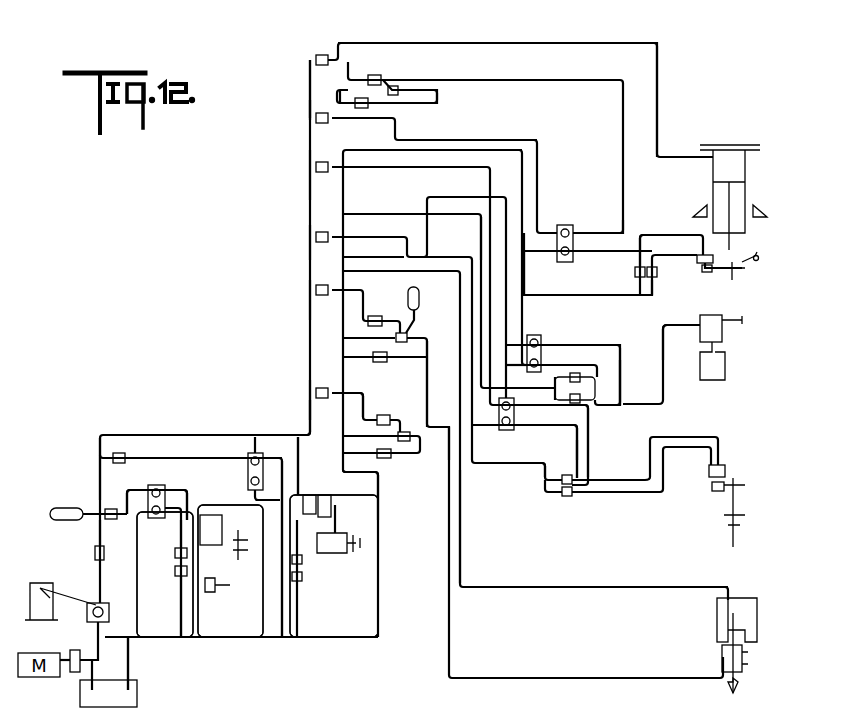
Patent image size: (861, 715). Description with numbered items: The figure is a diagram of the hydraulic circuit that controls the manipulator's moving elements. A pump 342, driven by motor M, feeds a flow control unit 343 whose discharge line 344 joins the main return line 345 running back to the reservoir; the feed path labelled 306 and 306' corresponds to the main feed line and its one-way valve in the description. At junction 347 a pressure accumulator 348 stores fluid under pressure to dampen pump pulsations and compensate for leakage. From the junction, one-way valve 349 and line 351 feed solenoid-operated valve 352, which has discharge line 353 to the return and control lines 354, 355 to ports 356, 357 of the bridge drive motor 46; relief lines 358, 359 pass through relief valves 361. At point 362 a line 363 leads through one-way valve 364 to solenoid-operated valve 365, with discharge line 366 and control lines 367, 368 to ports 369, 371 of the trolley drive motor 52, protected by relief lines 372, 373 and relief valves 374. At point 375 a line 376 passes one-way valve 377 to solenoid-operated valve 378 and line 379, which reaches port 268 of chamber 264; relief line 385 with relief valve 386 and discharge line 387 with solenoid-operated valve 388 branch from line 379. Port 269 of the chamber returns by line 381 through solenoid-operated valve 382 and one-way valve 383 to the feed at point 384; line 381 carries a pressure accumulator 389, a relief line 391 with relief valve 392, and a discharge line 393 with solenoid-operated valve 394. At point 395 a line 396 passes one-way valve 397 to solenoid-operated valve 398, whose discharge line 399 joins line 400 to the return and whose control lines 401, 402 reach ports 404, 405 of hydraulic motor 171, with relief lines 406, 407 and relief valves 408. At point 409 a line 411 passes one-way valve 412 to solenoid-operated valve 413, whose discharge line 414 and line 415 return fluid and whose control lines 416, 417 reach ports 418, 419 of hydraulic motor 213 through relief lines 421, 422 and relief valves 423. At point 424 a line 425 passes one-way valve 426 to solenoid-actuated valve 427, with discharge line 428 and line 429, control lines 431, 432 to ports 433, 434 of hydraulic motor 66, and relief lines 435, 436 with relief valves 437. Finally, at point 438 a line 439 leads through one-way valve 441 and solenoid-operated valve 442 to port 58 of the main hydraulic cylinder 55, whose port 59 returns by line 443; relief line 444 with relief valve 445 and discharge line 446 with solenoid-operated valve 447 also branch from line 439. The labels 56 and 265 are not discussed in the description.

The one-way valve 441 is at (320, 54).
The line 439 is at (355, 57).
The line 443 is at (612, 42).
The connection point on main feed line 438 is at (309, 60).
The relief line 444 is at (342, 90).
The one-way valve 426 is at (320, 110).
The connection point on main feed line 424 is at (314, 119).
The one-way valve 412 is at (314, 166).
The connection point on main feed line 409 is at (309, 172).
The one-way valve 397 is at (315, 236).
The connection point on main feed line 395 is at (309, 243).
The one-way valve 383 is at (315, 288).
The connection point on main feed line 384 is at (309, 300).
The relief line 391 is at (342, 336).
The solenoid-operated valve 394 is at (372, 356).
The one-way valve 377 is at (315, 390).
The connection point on main feed line 375 is at (315, 397).
The relief line 385 is at (308, 428).
The solenoid-operated valve 442 is at (381, 78).
The relief valve 445 is at (398, 88).
The discharge line 446 is at (438, 97).
The line 425 is at (444, 140).
The solenoid-operated valve 447 is at (362, 109).
The line 429 is at (512, 151).
The line 411 is at (386, 169).
The port 59 is at (690, 154).
The cylinder head 56 is at (733, 148).
The main hydraulic cylinder 55 is at (746, 172).
The port 58 is at (740, 235).
The solenoid-actuated valve 427 is at (565, 224).
The line 431 is at (620, 236).
The port 433 is at (700, 252).
The relief line 435 is at (641, 242).
The discharge line 428 is at (545, 256).
The line 432 is at (635, 258).
The relief valves 437 is at (635, 274).
The relief line 436 is at (657, 278).
The hydraulic motor 66 is at (707, 274).
The port 434 is at (740, 274).
The discharge line 414 is at (520, 344).
The solenoid-operated valve 413 is at (540, 340).
The line 416 is at (612, 342).
The port 418 is at (698, 323).
The hydraulic motor 213 is at (723, 321).
The line 417 is at (621, 356).
The relief line 421 is at (582, 377).
The relief valves 423 is at (594, 386).
The relief line 422 is at (582, 398).
The port 419 is at (713, 356).
The line 415 is at (479, 238).
The line 396 is at (382, 243).
The solenoid-operated valve 382 is at (376, 314).
The pressure accumulator 389 is at (419, 290).
The relief valve 392 is at (408, 330).
The line 376 is at (366, 400).
The discharge line 393 is at (430, 400).
The solenoid-operated valve 378 is at (384, 414).
The line 379 is at (446, 424).
The discharge line 387 is at (408, 442).
The relief valve 386 is at (388, 459).
The solenoid-operated valve 388 is at (380, 478).
The discharge line 399 is at (502, 430).
The solenoid-operated valve 398 is at (520, 428).
The line 400 is at (473, 466).
The line 401 is at (589, 442).
The line 402 is at (578, 458).
The relief line 407 is at (545, 472).
The relief line 406 is at (560, 483).
The relief valves 408 is at (564, 497).
The port 404 is at (709, 470).
The port 405 is at (724, 480).
The hydraulic motor 171 is at (730, 500).
The line 381 is at (612, 586).
The port 269 is at (718, 634).
The valve body 265 is at (721, 656).
The chamber 264 is at (744, 660).
The port 268 is at (740, 682).
The one-way valve 364 is at (118, 452).
The line 363 is at (158, 484).
The solenoid-operated valve 365 is at (250, 452).
The connection point on main feed line 362 is at (99, 440).
The solenoid-operated valve 352 is at (150, 458).
The line 351 is at (127, 496).
The line 354 is at (188, 492).
The port 356 is at (208, 514).
The junction 347 is at (106, 509).
The pressure accumulator 348 is at (50, 512).
The one-way valve 349 is at (98, 532).
The discharge line 353 is at (137, 552).
The line 355 is at (180, 530).
The port 357 is at (176, 553).
The relief line 358 is at (176, 570).
The relief valves 361 is at (180, 592).
The control 306' is at (49, 593).
The valve 306 is at (76, 562).
The flow control unit 343 is at (106, 605).
The pump 342 is at (72, 650).
The discharge line 344 is at (130, 657).
The main return line 345 is at (250, 640).
The discharge line 366 is at (216, 586).
The relief line 359 is at (199, 621).
The line 368 is at (281, 502).
The line 367 is at (299, 458).
The port 369 is at (299, 492).
The trolley drive motor 52 is at (332, 500).
The port 371 is at (338, 524).
The relief valves 374 is at (302, 560).
The relief line 372 is at (302, 578).
The relief line 373 is at (292, 615).
The bridge drive motor 46 is at (243, 545).